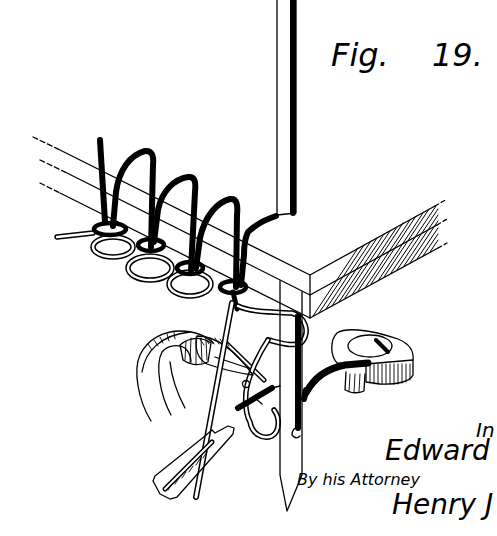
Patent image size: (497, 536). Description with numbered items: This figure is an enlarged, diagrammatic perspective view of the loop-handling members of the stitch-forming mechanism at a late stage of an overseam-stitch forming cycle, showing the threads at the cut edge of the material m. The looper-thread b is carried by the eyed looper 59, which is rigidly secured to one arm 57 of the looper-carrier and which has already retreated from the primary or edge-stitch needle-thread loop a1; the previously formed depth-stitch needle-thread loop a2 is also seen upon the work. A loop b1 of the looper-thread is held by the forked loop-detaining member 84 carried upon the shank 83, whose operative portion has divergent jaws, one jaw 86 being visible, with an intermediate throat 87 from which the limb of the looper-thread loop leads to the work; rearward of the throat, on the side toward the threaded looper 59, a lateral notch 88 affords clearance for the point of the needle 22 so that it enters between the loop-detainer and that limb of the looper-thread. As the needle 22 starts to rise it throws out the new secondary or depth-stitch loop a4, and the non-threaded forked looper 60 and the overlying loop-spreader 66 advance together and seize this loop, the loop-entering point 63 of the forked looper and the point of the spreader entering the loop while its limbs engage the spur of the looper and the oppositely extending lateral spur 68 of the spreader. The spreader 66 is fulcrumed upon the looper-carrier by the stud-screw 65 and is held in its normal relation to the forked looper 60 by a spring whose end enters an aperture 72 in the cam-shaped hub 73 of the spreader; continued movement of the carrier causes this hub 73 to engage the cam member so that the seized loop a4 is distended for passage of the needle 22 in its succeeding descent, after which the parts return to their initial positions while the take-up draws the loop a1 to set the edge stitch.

The material m is at (240, 227).
The primary needle-thread loop a1 is at (185, 216).
The secondary needle-thread loop a2 is at (95, 223).
The new secondary needle-thread loop a4 is at (290, 438).
The looper-thread loop b1 is at (184, 266).
The looper-thread b is at (203, 477).
The needle 22 is at (290, 396).
The looper-carrier arm 57 is at (263, 428).
The eyed looper 59 is at (197, 438).
The forked looper 60 is at (357, 389).
The loop-entering point 63 is at (243, 411).
The stud-screw 65 is at (230, 344).
The loop-spreader 66 is at (328, 366).
The lateral spur 68 is at (307, 400).
The aperture 72 is at (371, 376).
The cam-shaped hub 73 is at (402, 340).
The shank 83 is at (149, 390).
The loop-detaining member 84 is at (200, 329).
The jaw 86 is at (242, 386).
The throat 87 is at (234, 355).
The lateral notch 88 is at (187, 364).